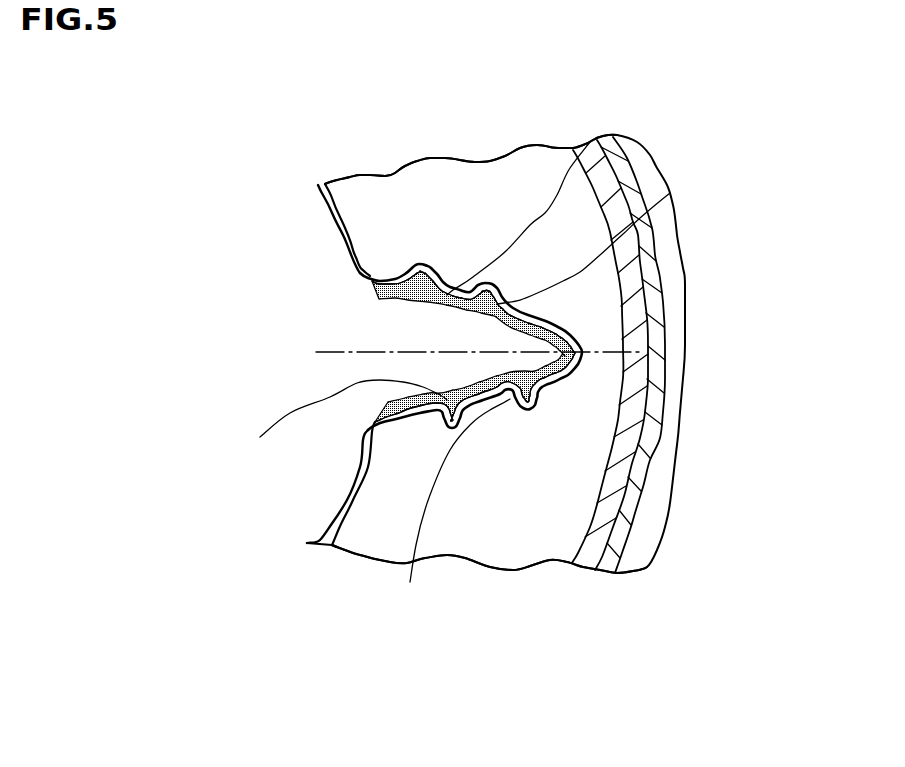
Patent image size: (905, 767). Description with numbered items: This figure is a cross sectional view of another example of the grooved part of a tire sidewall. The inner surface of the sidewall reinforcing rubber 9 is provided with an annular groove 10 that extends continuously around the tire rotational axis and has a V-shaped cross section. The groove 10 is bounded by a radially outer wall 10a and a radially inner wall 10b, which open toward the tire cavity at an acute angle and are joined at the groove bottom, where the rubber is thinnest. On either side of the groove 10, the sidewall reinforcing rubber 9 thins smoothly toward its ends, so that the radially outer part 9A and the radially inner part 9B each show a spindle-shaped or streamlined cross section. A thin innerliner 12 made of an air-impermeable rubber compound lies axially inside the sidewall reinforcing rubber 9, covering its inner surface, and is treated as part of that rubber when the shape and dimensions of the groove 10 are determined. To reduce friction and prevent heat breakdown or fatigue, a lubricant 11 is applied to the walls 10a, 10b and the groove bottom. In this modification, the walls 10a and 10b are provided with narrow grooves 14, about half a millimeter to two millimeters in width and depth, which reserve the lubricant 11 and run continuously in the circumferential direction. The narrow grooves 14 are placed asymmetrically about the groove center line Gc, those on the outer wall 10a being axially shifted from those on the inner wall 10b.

The sidewall reinforcing rubber 9 is at (363, 208).
The radially outer part 9A is at (493, 182).
The radially inner part 9B is at (498, 532).
The innerliner 12 is at (318, 189).
The annular groove 10 is at (420, 367).
The radially outer wall 10a is at (366, 285).
The radially inner wall 10b is at (370, 411).
The lubricant 11 is at (445, 304).
The groove center line Gc is at (314, 352).
The narrow grooves 14 is at (590, 142).